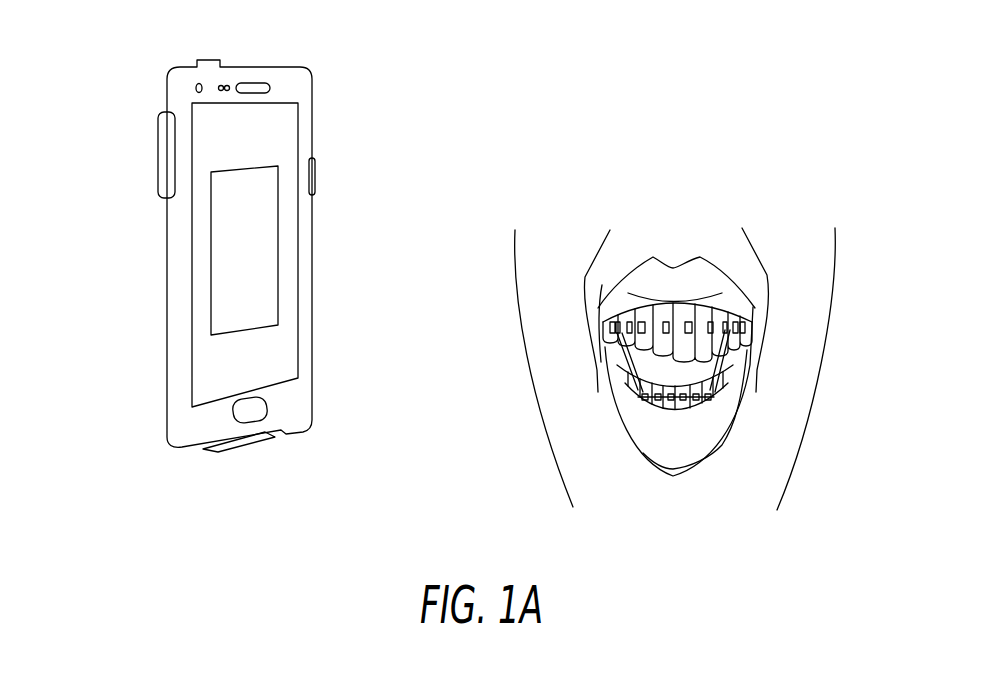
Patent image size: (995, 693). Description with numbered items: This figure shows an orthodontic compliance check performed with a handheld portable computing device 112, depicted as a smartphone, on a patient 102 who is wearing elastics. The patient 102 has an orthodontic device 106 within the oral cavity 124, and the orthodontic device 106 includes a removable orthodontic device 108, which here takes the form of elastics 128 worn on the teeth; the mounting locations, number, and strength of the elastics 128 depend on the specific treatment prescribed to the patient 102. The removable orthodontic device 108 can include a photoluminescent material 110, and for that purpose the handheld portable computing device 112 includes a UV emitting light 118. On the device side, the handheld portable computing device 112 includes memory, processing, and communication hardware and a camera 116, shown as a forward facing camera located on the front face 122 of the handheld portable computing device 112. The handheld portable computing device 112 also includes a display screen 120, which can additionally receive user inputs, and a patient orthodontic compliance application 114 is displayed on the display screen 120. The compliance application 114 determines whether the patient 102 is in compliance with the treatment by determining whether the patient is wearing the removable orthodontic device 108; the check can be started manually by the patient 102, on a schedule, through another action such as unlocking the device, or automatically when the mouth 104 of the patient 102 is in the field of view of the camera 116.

The patient 102 is at (751, 129).
The mouth 104 is at (780, 232).
The orthodontic device 106 is at (692, 430).
The removable orthodontic device 108 is at (735, 354).
The photoluminescent material 110 is at (716, 394).
The handheld portable computing device 112 is at (111, 76).
The patient orthodontic compliance application 114 is at (223, 262).
The camera 116 is at (210, 79).
The UV emitting light 118 is at (227, 93).
The display screen 120 is at (290, 242).
The front face 122 is at (353, 100).
The oral cavity 124 is at (569, 254).
The elastics 128 is at (755, 390).